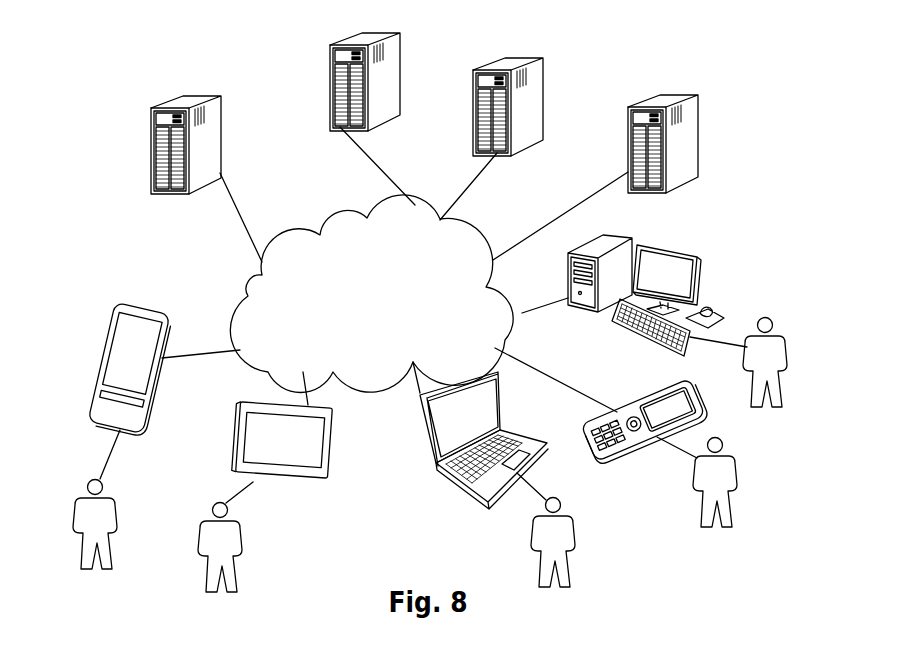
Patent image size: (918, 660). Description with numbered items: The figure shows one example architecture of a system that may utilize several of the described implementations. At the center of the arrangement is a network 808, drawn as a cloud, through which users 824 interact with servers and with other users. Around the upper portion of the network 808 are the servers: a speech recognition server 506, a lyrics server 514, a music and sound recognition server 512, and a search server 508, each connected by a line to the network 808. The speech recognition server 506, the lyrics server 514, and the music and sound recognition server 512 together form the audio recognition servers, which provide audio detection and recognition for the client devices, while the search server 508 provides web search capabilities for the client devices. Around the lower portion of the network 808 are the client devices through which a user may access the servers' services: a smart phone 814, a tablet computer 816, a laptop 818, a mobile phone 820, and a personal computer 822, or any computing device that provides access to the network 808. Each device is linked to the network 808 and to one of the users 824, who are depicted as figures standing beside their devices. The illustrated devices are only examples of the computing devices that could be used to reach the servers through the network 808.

The speech recognition server 506 is at (160, 170).
The search server 508 is at (697, 158).
The music and sound recognition server 512 is at (542, 120).
The lyrics server 514 is at (340, 102).
The network 808 is at (253, 308).
The smart phone 814 is at (118, 338).
The tablet computer 816 is at (258, 443).
The laptop 818 is at (473, 413).
The mobile phone 820 is at (663, 405).
The personal computer 822 is at (677, 270).
The users 824 is at (103, 517).